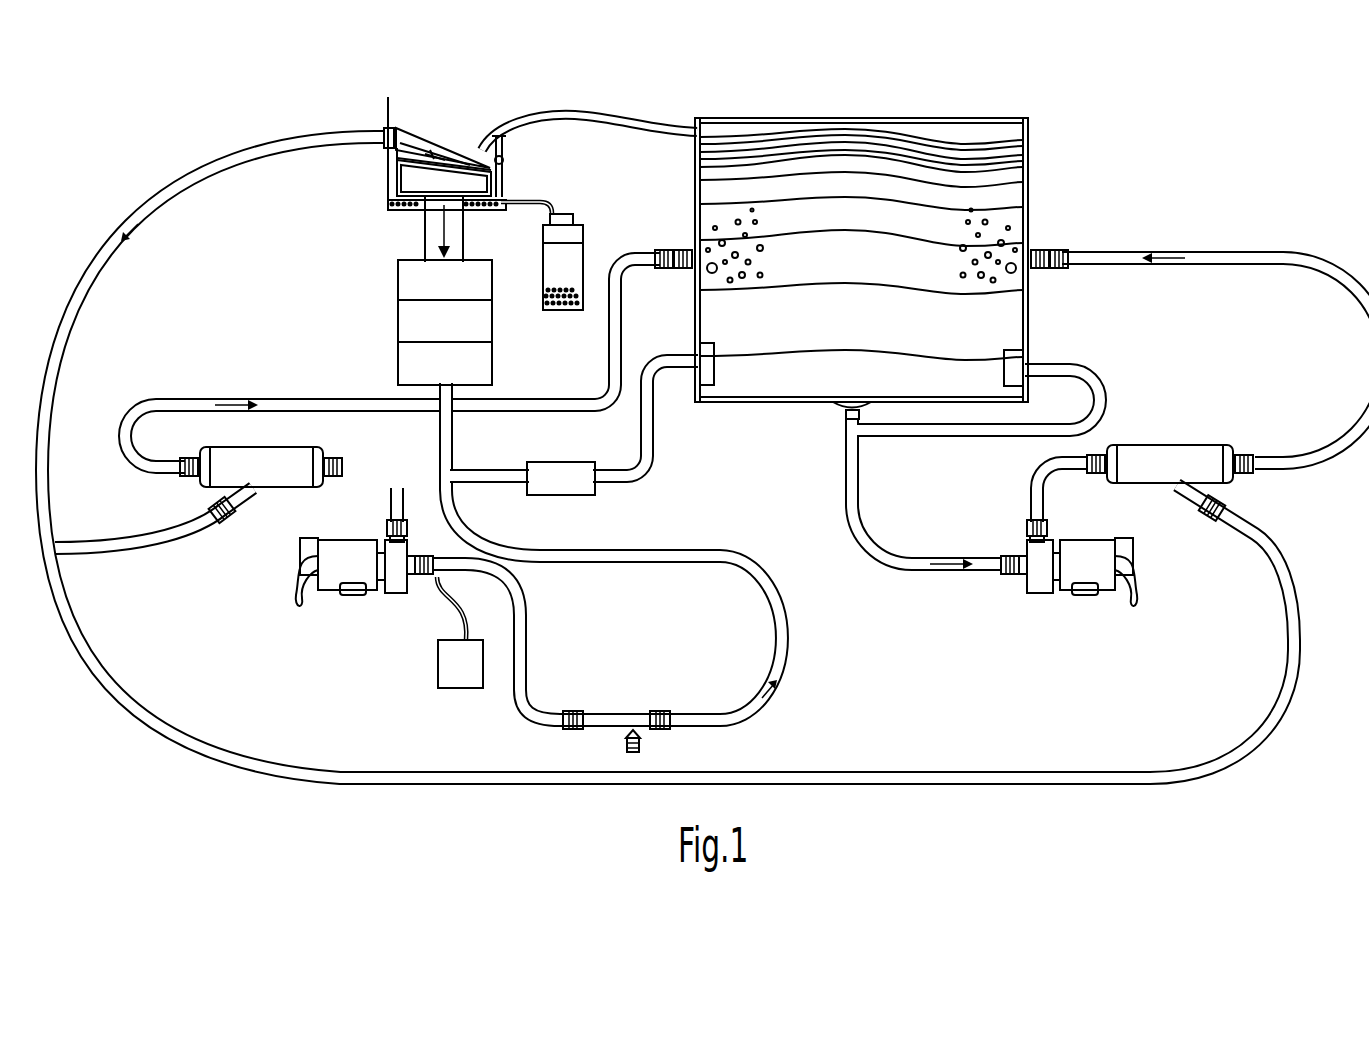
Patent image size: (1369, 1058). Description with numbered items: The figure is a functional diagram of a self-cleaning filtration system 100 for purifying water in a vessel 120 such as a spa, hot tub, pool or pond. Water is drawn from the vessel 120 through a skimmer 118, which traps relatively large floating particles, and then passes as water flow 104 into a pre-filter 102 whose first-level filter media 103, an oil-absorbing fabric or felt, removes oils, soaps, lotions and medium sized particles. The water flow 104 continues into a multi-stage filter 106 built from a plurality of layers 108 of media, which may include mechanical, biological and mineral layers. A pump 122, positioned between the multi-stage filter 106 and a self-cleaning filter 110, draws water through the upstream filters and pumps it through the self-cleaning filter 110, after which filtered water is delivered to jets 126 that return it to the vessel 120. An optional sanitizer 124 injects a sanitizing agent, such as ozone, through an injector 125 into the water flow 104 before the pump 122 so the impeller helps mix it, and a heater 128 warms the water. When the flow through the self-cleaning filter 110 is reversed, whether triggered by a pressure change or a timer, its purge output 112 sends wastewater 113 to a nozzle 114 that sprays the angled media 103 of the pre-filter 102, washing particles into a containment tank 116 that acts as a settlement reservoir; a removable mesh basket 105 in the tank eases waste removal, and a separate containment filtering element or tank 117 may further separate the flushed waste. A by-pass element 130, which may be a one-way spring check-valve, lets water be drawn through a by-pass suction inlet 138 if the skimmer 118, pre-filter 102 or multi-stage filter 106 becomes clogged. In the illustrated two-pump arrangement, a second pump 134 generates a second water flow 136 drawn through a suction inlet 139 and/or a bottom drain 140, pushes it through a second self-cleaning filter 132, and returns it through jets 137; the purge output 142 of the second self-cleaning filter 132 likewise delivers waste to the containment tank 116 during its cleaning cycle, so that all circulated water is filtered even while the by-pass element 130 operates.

The filtration system 100 is at (205, 92).
The pre-filter 102 is at (395, 180).
The first-level filter media 103 is at (396, 156).
The water flow 104 is at (440, 224).
The removable filter and/or basket 105 is at (504, 176).
The multi-stage filter 106 is at (420, 323).
The layers 108 is at (492, 286).
The self-cleaning filter 110 is at (263, 448).
The purge output 112 is at (234, 520).
The wastewater 113 is at (126, 240).
The nozzle 114 is at (434, 143).
The containment tank 116 is at (510, 196).
The containment filtering element or separate tank 117 is at (562, 213).
The skimmer 118 is at (505, 146).
The vessel 120 is at (1031, 182).
The pump 122 is at (352, 538).
The sanitizer 124 is at (437, 663).
The injector 125 is at (464, 618).
The jets 126 is at (661, 250).
The heater 128 is at (662, 732).
The by-pass element 130 is at (565, 462).
The second self-cleaning filter 132 is at (1172, 445).
The second pump 134 is at (1083, 598).
The second water flow 136 is at (1176, 254).
The jets 137 is at (1056, 251).
The by-pass suction inlet 138 is at (693, 355).
The suction inlet 139 is at (1035, 366).
The bottom drain 140 is at (840, 410).
The purge output 142 is at (1184, 492).